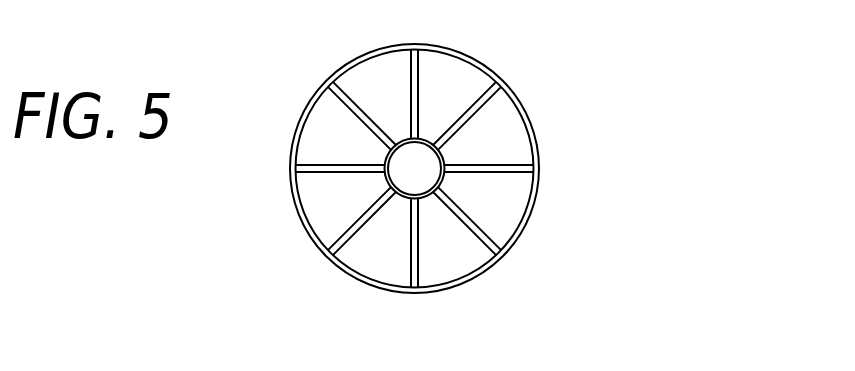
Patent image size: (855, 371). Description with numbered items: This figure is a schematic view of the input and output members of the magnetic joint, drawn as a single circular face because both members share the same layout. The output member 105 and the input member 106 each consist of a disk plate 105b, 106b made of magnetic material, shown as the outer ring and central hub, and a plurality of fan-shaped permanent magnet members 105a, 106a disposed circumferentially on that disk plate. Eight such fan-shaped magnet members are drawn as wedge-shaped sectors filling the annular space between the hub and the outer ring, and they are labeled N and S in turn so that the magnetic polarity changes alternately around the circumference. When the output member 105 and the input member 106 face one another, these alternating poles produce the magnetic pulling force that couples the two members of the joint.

The output member 105 is at (479, 153).
The input member 106 is at (545, 130).
The fan-shaped permanent magnet members 105a is at (429, 150).
The fan-shaped permanent magnet members 106a is at (352, 80).
The disk plate 105b is at (502, 168).
The disk plate 106b is at (529, 202).